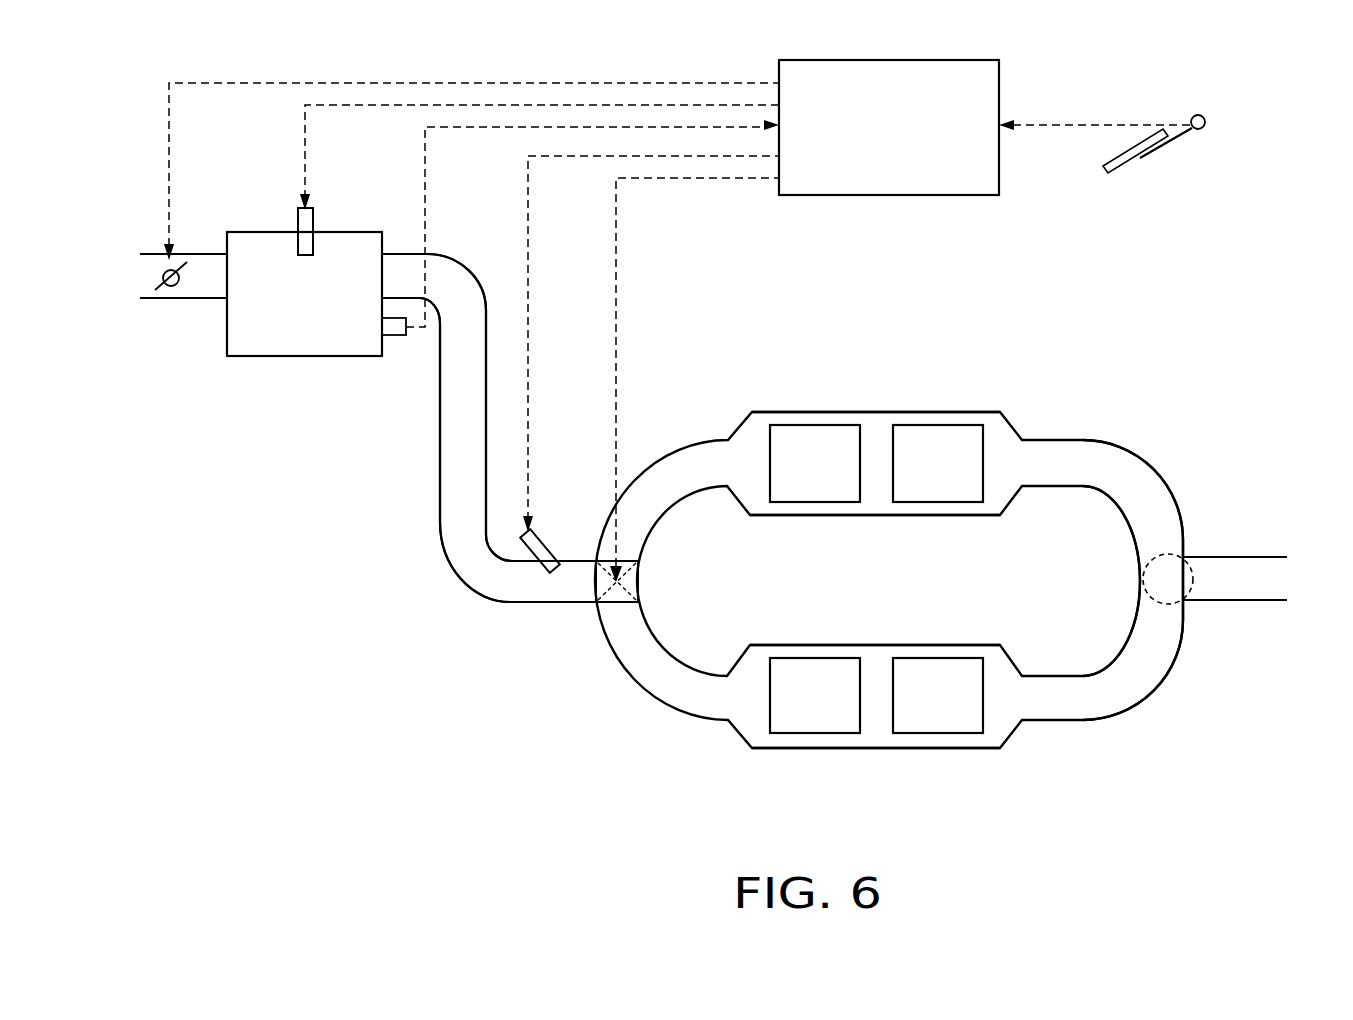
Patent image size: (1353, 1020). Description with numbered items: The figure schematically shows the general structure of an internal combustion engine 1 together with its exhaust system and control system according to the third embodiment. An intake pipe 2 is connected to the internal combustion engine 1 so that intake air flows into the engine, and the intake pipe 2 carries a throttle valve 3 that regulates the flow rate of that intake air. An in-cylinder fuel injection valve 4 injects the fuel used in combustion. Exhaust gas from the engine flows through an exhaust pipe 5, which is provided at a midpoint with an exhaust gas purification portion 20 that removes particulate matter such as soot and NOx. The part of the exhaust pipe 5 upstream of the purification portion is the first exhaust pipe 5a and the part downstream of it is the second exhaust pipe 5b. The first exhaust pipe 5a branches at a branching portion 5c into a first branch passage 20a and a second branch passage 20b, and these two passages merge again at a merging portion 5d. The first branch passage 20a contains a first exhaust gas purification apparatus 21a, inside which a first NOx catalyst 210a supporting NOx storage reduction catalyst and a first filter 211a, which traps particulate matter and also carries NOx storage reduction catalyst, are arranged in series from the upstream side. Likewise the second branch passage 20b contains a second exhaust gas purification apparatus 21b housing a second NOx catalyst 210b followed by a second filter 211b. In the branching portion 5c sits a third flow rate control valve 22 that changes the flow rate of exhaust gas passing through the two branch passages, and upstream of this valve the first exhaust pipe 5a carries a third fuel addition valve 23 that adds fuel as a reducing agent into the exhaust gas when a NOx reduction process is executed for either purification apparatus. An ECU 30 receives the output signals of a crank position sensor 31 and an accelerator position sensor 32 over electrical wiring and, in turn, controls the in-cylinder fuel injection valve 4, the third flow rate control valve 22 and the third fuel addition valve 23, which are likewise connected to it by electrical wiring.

The internal combustion engine 1 is at (256, 356).
The intake pipe 2 is at (208, 253).
The throttle valve 3 is at (173, 287).
The in-cylinder fuel injection valve 4 is at (315, 223).
The exhaust pipe 5 is at (436, 600).
The first exhaust pipe 5a is at (477, 593).
The second exhaust pipe 5b is at (1245, 557).
The branching portion 5c is at (638, 602).
The merging portion 5d is at (1170, 553).
The exhaust gas purification portion 20 is at (733, 347).
The first branch passage 20a is at (1160, 478).
The second branch passage 20b is at (1120, 657).
The first exhaust gas purification apparatus 21a is at (870, 388).
The second exhaust gas purification apparatus 21b is at (879, 612).
The third flow rate control valve 22 is at (597, 602).
The third fuel addition valve 23 is at (543, 570).
The ECU 30 is at (960, 195).
The crank position sensor 31 is at (399, 335).
The accelerator position sensor 32 is at (1200, 130).
The first NOx catalyst 210a is at (768, 500).
The second NOx catalyst 210b is at (788, 658).
The first filter 211a is at (943, 425).
The second filter 211b is at (952, 657).